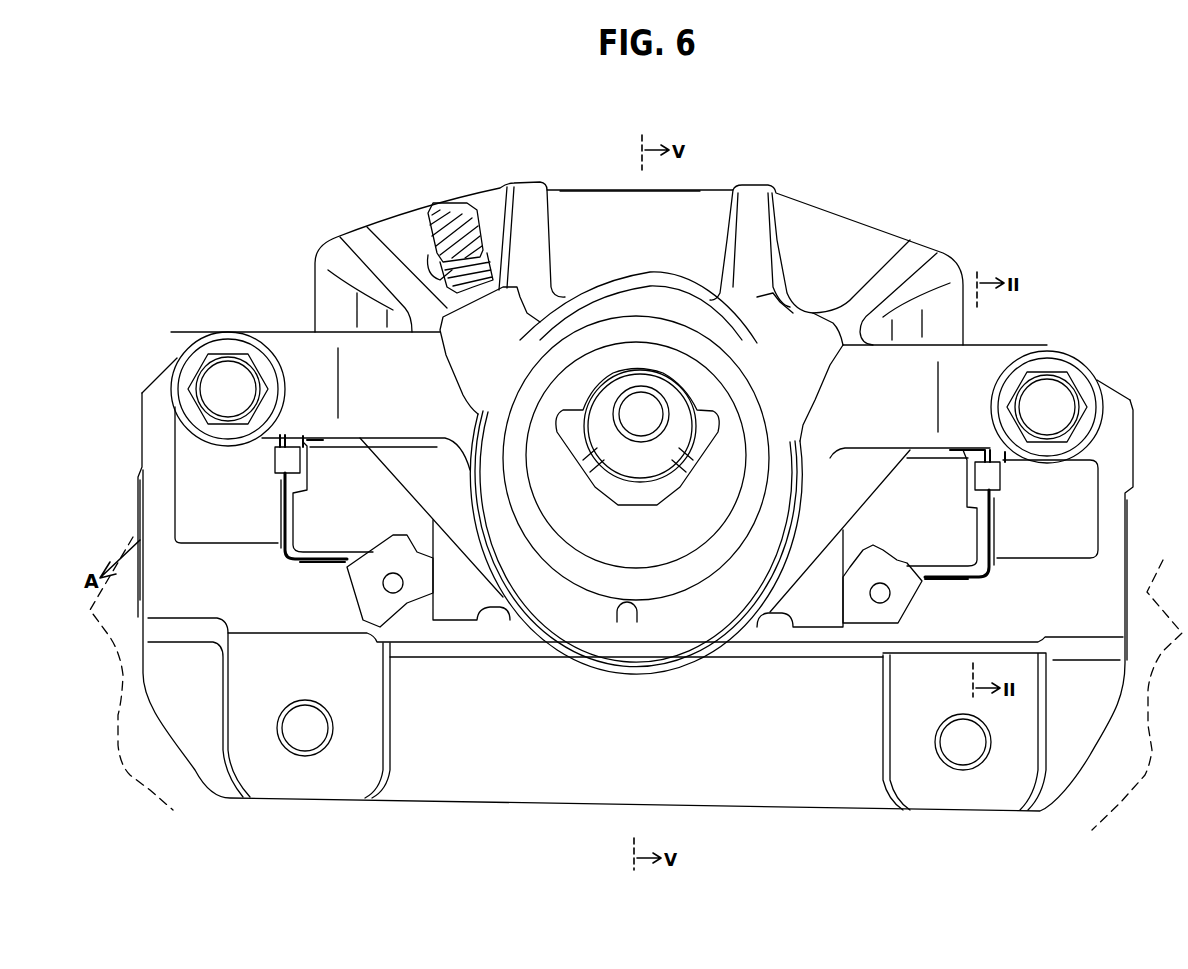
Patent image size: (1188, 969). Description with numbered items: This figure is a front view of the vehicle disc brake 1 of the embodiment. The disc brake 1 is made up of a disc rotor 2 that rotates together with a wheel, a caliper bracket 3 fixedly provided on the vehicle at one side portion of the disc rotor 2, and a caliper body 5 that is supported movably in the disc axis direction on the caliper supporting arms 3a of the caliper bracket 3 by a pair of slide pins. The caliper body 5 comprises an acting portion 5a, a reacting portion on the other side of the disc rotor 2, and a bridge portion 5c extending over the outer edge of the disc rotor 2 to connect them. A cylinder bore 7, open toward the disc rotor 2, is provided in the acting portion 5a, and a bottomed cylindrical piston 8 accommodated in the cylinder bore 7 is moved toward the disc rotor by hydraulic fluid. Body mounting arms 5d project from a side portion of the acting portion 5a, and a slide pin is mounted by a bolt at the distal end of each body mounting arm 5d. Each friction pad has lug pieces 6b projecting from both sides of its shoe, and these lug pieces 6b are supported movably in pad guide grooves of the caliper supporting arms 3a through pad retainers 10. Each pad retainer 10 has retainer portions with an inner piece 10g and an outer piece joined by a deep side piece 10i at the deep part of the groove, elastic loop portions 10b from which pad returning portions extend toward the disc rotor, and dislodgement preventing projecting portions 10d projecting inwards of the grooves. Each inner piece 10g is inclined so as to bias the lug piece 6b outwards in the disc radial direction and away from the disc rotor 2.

The vehicle disc brake 1 is at (648, 125).
The disc rotor 2 is at (1150, 585).
The caliper bracket 3 is at (1136, 386).
The caliper supporting arm 3a is at (152, 423).
The caliper body 5 is at (774, 170).
The acting portion 5a is at (598, 640).
The bridge portion 5c is at (583, 195).
The body mounting arm 5d is at (303, 331).
The lug piece 6b is at (303, 568).
The cylinder bore 7 is at (628, 623).
The piston 8 is at (647, 606).
The pad retainer 10 is at (268, 492).
The elastic loop portion 10b is at (275, 458).
The dislodgement preventing projecting portion 10d is at (310, 453).
The inner piece 10g is at (323, 556).
The deep side piece 10i is at (280, 536).